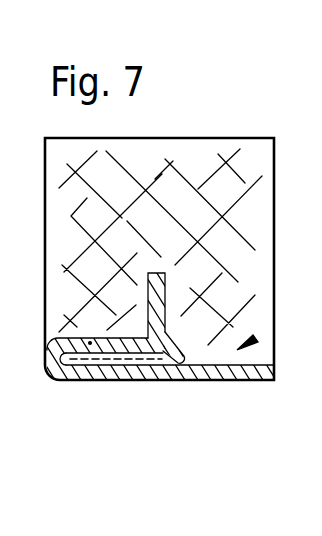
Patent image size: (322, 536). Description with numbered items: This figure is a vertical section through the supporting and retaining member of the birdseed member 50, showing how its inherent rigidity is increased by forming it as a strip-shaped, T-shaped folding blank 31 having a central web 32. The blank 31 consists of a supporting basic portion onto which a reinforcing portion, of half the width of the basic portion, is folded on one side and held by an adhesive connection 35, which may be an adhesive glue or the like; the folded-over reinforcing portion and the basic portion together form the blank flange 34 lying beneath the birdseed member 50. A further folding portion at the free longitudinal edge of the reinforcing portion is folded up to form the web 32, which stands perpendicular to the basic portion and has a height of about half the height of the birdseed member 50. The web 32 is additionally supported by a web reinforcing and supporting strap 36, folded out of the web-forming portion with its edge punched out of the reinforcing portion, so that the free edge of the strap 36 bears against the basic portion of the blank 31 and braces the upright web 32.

The blank 31 is at (255, 339).
The central web 32 is at (160, 284).
The blank flange 34 is at (86, 370).
The adhesive connection 35 is at (127, 382).
The web reinforcing and supporting strap 36 is at (180, 342).
The birdseed member 50 is at (160, 149).